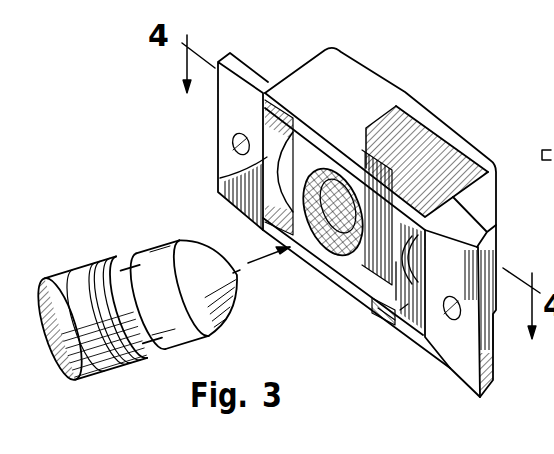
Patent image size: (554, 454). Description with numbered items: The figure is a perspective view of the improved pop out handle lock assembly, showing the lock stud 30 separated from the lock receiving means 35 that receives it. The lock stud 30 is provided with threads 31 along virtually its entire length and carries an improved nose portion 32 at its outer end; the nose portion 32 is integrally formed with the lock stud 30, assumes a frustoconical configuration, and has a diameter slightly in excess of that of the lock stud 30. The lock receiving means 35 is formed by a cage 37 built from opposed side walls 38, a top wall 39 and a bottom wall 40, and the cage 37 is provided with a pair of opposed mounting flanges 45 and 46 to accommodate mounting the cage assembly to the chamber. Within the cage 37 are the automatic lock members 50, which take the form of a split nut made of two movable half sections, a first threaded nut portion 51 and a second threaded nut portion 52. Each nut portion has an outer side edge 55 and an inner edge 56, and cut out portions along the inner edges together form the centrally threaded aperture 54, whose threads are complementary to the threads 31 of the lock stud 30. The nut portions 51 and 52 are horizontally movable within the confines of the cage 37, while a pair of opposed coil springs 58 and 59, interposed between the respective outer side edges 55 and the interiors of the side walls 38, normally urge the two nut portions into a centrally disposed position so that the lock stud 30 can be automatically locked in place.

The lock stud 30 is at (133, 318).
The threads 31 is at (88, 277).
The nose portion 32 is at (188, 242).
The lock receiving means 35 is at (418, 55).
The cage 37 is at (457, 150).
The side walls 38 is at (306, 53).
The top wall 39 is at (410, 120).
The bottom wall 40 is at (398, 320).
The mounting flange 45 is at (217, 123).
The mounting flange 46 is at (488, 362).
The automatic lock members 50 is at (378, 308).
The first threaded nut portion 51 is at (400, 310).
The second threaded nut portion 52 is at (308, 252).
The threaded aperture 54 is at (312, 258).
The outer side edge 55 is at (263, 240).
The inner edge 56 is at (352, 150).
The coil spring 58 is at (220, 178).
The coil spring 59 is at (402, 270).